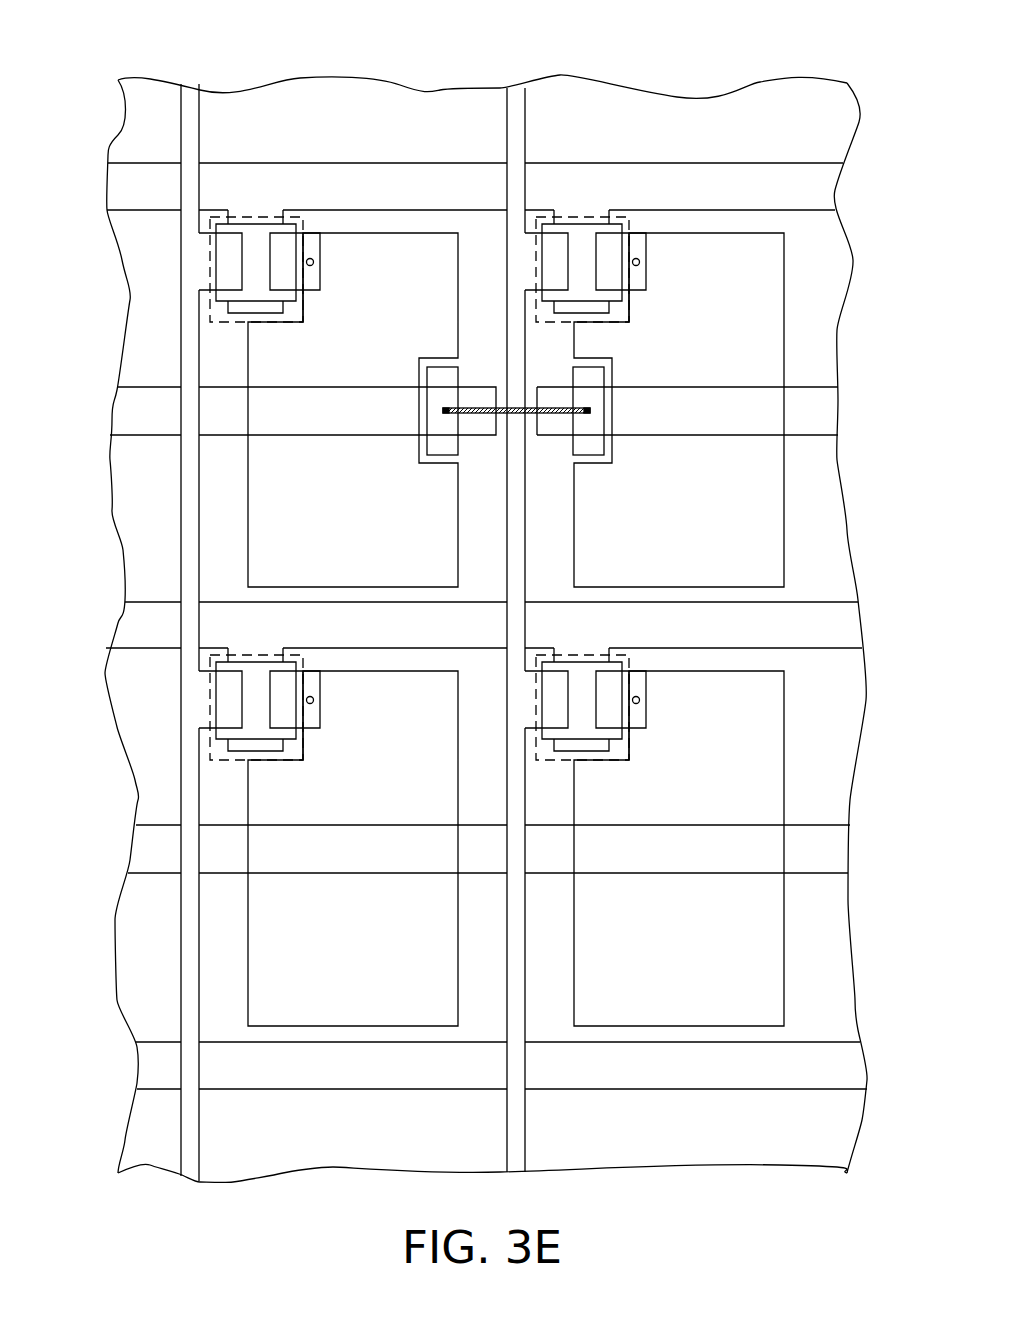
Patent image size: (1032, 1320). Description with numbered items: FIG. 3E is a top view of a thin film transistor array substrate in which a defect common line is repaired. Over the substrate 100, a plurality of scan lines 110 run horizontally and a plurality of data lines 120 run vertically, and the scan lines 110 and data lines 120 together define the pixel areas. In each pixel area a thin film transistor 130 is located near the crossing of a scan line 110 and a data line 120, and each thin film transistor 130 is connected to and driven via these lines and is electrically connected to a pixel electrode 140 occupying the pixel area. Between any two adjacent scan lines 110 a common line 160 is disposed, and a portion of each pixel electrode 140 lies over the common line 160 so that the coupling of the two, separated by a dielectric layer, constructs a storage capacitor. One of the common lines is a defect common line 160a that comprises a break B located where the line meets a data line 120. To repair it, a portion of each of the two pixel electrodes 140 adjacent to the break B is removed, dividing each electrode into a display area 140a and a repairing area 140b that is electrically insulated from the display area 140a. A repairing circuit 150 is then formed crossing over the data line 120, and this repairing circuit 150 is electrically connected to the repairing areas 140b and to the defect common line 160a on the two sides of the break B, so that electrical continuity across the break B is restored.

The substrate 100 is at (813, 1135).
The scan line 110 is at (128, 185).
The data line 120 is at (192, 100).
The thin film transistor 130 is at (210, 266).
The pixel electrode 140 is at (478, 525).
The display area 140a is at (382, 273).
The repairing area 140b is at (448, 368).
The repairing circuit 150 is at (515, 403).
The common line 160 is at (153, 851).
The defect common line 160a is at (148, 413).
The break B is at (506, 443).